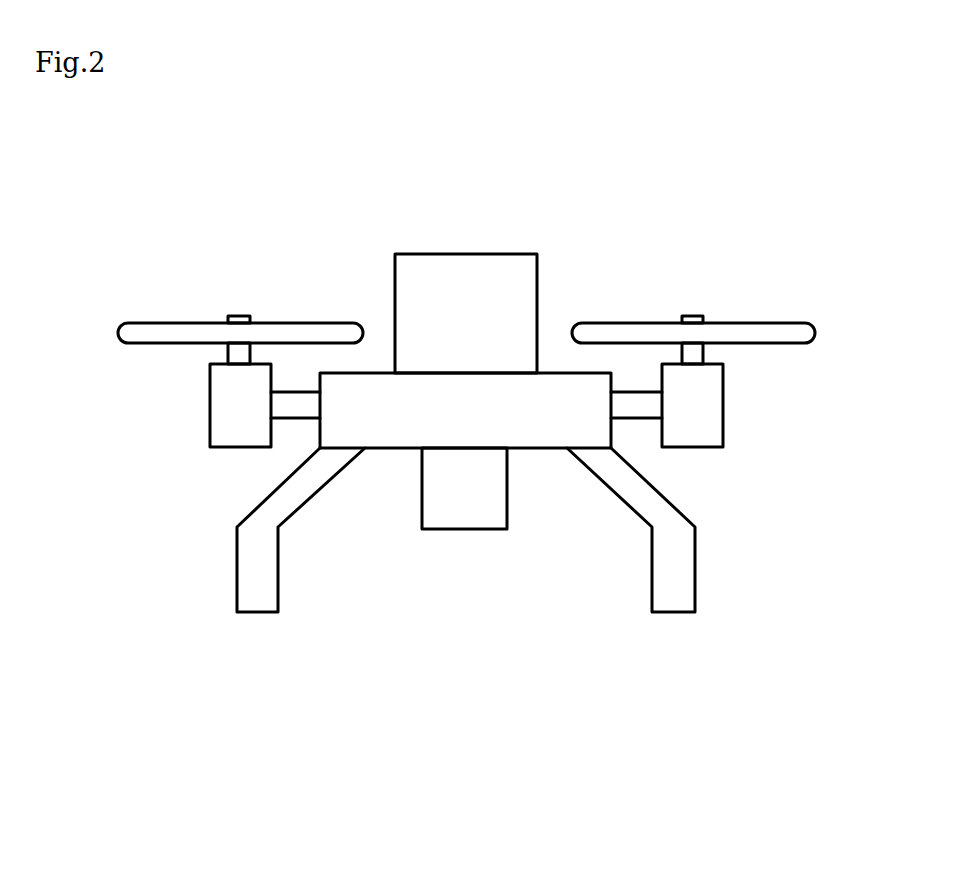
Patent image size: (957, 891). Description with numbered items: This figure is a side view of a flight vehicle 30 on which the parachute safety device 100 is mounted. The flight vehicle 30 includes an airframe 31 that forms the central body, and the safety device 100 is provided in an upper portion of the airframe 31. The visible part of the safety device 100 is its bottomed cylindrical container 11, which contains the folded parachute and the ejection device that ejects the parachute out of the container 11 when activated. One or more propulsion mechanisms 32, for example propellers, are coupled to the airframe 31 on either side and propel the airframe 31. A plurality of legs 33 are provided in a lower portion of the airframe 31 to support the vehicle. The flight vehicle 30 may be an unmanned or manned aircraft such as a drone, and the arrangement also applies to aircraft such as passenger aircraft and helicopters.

The safety device 100 is at (460, 458).
The container 11 is at (413, 285).
The flight vehicle 30 is at (462, 552).
The airframe 31 is at (405, 432).
The propulsion mechanism 32 is at (155, 333).
The leg 33 is at (263, 593).